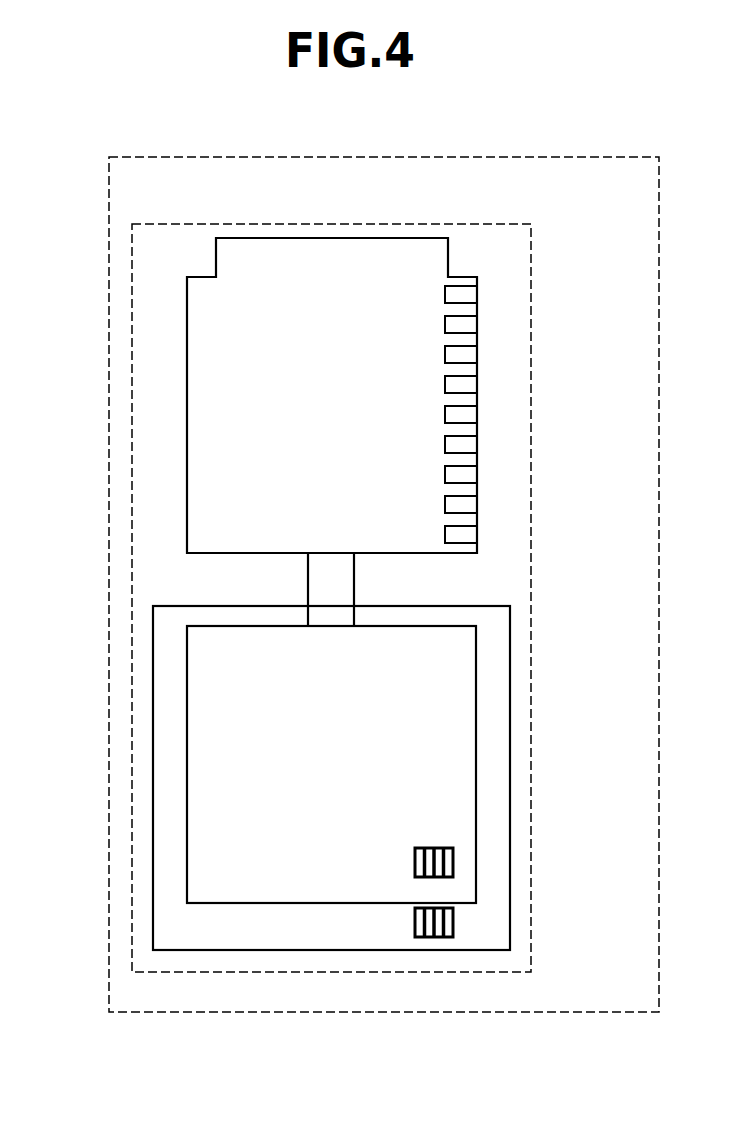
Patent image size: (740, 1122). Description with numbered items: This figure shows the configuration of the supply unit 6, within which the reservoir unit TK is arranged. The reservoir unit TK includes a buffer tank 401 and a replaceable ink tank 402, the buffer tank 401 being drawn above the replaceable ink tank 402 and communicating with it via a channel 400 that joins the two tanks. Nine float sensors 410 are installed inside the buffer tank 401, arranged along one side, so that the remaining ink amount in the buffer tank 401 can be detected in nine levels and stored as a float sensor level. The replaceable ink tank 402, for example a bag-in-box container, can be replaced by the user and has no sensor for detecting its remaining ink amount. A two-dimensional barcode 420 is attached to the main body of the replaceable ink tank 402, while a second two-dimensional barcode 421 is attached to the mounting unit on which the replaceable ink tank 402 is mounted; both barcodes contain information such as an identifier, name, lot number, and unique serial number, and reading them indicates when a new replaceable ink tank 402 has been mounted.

The supply unit 6 is at (220, 157).
The reservoir unit TK is at (292, 224).
The buffer tank 401 is at (187, 410).
The replaceable ink tank 402 is at (187, 762).
The float sensors 410 is at (477, 294).
The channel 400 is at (355, 580).
The two-dimensional barcode 420 is at (454, 860).
The two-dimensional barcode 421 is at (454, 920).